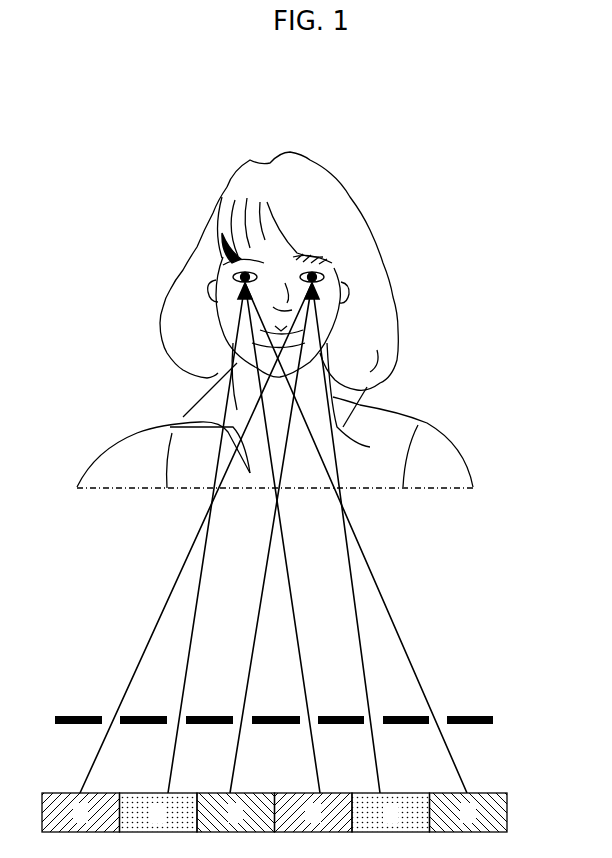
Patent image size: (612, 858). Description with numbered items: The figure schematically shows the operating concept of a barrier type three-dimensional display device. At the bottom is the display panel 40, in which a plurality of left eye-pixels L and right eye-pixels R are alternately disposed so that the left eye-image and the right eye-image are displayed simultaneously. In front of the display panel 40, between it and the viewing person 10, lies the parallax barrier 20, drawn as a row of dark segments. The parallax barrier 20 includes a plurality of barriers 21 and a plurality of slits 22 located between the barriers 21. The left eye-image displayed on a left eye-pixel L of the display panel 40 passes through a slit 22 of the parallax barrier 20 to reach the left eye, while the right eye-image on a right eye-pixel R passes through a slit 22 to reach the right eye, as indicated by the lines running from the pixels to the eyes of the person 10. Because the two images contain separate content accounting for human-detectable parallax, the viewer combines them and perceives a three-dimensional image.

The viewer 10 is at (420, 168).
The parallax barrier 20 is at (493, 718).
The barrier 21 is at (443, 710).
The slit 22 is at (547, 686).
The display panel 40 is at (508, 812).